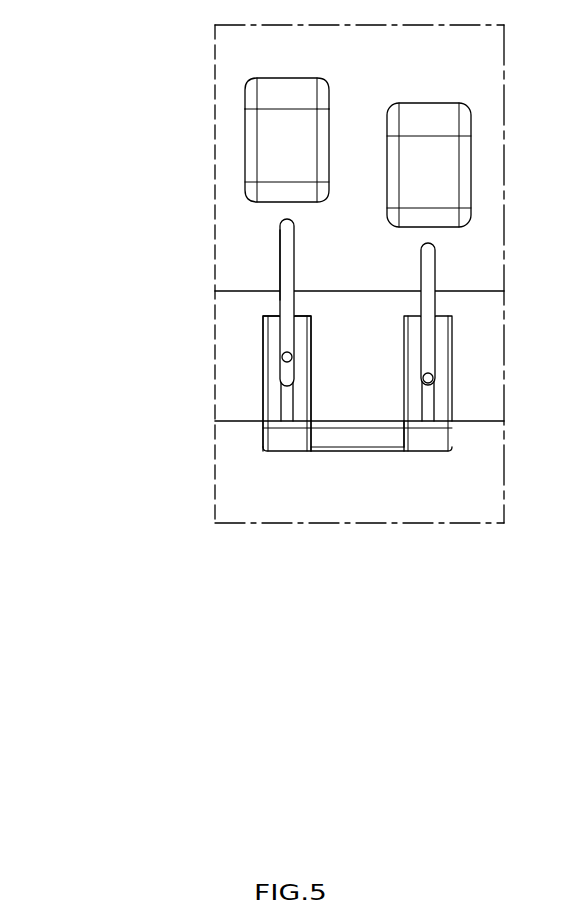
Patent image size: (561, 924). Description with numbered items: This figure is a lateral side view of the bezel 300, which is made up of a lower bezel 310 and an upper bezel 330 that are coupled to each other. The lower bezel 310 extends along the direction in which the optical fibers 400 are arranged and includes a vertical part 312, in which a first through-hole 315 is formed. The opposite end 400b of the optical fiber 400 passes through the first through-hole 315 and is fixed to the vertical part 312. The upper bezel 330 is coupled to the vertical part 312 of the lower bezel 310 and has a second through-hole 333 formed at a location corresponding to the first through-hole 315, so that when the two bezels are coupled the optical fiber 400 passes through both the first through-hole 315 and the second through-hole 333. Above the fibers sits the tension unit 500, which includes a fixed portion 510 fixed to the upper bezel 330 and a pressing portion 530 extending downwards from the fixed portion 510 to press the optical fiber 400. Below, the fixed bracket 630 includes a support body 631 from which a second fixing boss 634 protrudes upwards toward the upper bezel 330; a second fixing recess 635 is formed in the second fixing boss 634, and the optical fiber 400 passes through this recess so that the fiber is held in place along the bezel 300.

The bezel 300 is at (318, 385).
The lower bezel 310 is at (318, 341).
The vertical part 312 is at (369, 486).
The first through-hole 315 is at (283, 299).
The upper bezel 330 is at (231, 241).
The second through-hole 333 is at (283, 260).
The optical fiber 400 is at (234, 347).
The opposite end of the optical fiber 400b is at (280, 369).
The tension unit 500 is at (279, 152).
The fixed portion 510 is at (273, 97).
The pressing portion 530 is at (279, 157).
The fixed bracket 630 is at (292, 485).
The support body 631 is at (331, 438).
The second fixing boss 634 is at (284, 357).
The second fixing recess 635 is at (283, 330).